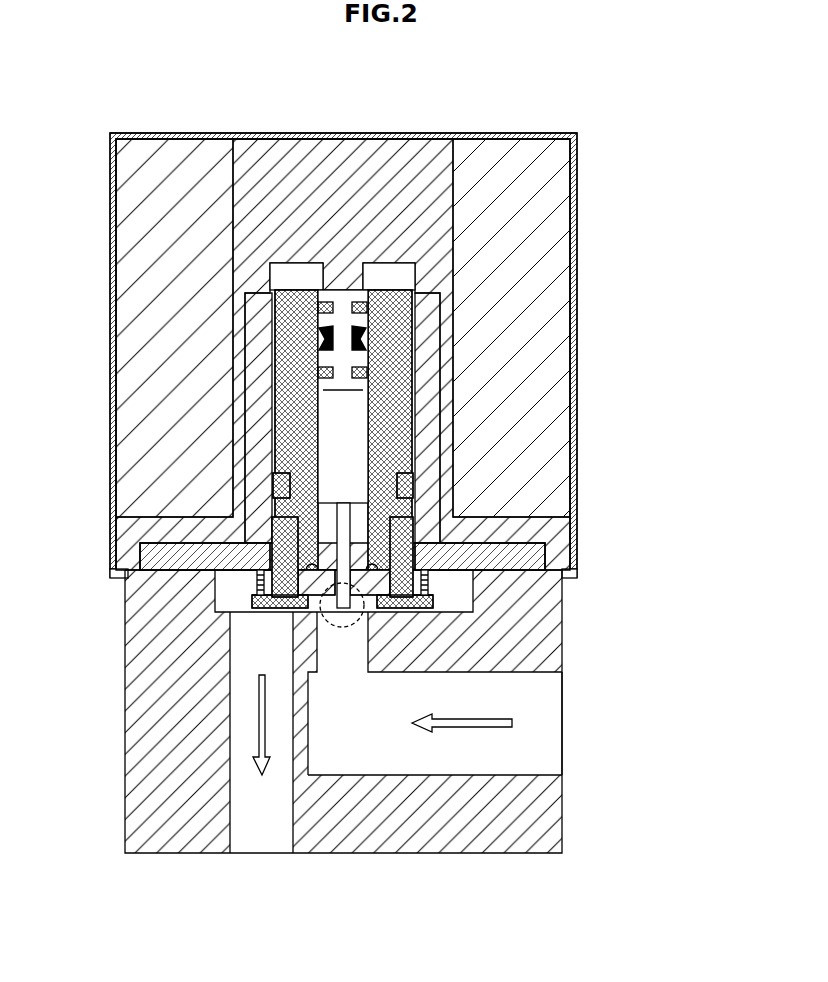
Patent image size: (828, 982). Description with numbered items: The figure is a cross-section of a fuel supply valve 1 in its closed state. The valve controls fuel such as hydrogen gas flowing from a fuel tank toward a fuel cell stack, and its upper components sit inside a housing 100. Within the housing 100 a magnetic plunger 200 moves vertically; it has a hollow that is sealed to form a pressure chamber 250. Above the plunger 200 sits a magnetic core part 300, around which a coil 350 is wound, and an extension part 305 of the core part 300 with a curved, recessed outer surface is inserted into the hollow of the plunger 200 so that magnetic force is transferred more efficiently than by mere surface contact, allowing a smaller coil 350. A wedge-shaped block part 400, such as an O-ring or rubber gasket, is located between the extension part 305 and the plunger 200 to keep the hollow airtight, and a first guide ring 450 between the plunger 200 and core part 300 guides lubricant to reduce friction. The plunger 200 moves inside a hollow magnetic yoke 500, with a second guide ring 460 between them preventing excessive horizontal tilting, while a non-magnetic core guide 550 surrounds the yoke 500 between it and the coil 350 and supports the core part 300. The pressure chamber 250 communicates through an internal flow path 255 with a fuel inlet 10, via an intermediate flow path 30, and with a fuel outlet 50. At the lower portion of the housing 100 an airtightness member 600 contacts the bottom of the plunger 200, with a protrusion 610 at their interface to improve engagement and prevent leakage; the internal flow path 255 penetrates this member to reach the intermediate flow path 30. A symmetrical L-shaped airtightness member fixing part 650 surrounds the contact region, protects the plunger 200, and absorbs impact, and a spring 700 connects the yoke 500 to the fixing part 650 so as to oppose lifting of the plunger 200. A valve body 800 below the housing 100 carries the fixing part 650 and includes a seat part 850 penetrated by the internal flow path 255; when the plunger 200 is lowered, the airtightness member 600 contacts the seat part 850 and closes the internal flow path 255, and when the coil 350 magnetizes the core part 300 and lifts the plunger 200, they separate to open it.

The fuel supply valve 1 is at (609, 96).
The fuel inlet 10 is at (533, 758).
The intermediate flow path 30 is at (343, 663).
The fuel outlet 50 is at (250, 832).
The housing 100 is at (577, 423).
The plunger 200 is at (392, 377).
The pressure chamber 250 is at (347, 453).
The internal flow path 255 is at (343, 528).
The core part 300 is at (330, 152).
The extension part 305 is at (355, 318).
The coil 350 is at (552, 175).
The block part 400 is at (320, 330).
The first guide ring 450 is at (322, 301).
The second guide ring 460 is at (283, 488).
The yoke 500 is at (532, 553).
The core guide 550 is at (558, 532).
The airtightness member 600 is at (428, 568).
The protrusion 610 is at (300, 605).
The airtightness member fixing part 650 is at (388, 602).
The spring 700 is at (372, 583).
The valve body 800 is at (225, 587).
The seat part 850 is at (325, 623).